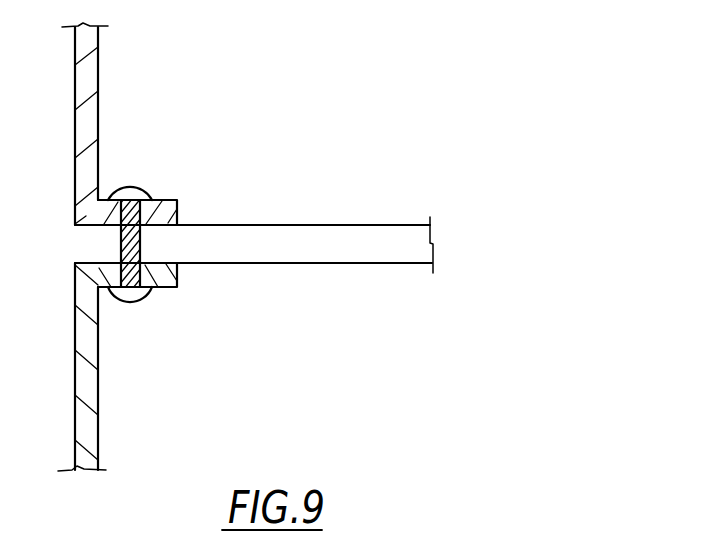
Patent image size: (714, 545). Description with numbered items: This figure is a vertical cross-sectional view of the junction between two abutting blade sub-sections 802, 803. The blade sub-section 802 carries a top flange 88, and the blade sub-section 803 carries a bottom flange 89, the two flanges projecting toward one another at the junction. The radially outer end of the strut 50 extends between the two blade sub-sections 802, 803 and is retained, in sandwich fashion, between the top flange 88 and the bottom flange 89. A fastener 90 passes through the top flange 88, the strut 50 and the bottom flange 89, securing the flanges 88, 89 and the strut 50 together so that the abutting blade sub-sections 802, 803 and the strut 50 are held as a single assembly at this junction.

The strut 50 is at (398, 233).
The top flange 88 is at (177, 273).
The bottom flange 89 is at (182, 207).
The fastener 90 is at (141, 183).
The blade sub-section 802 is at (87, 383).
The blade sub-section 803 is at (92, 117).